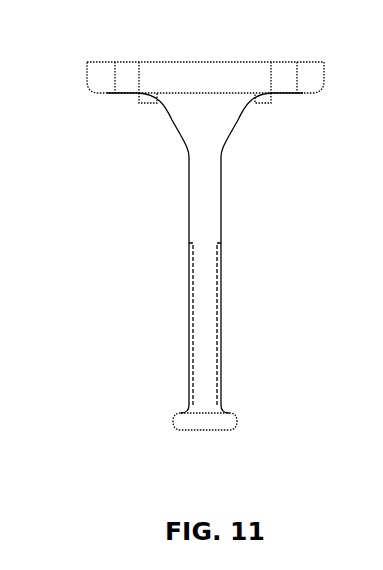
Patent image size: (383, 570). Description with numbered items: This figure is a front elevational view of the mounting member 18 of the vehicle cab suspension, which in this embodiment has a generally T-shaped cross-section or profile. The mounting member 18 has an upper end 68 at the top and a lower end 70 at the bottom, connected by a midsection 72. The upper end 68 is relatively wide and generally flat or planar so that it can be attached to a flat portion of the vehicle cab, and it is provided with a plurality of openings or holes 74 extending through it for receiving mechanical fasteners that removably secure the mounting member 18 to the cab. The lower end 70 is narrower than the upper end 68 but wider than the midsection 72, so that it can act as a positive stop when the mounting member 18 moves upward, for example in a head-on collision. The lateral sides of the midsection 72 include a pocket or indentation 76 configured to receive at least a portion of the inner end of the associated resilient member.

The mounting member 18 is at (163, 170).
The upper end 68 is at (92, 73).
The lower end 70 is at (205, 430).
The midsection 72 is at (222, 180).
The openings or holes 74 is at (142, 77).
The pocket or indentation 76 is at (189, 310).